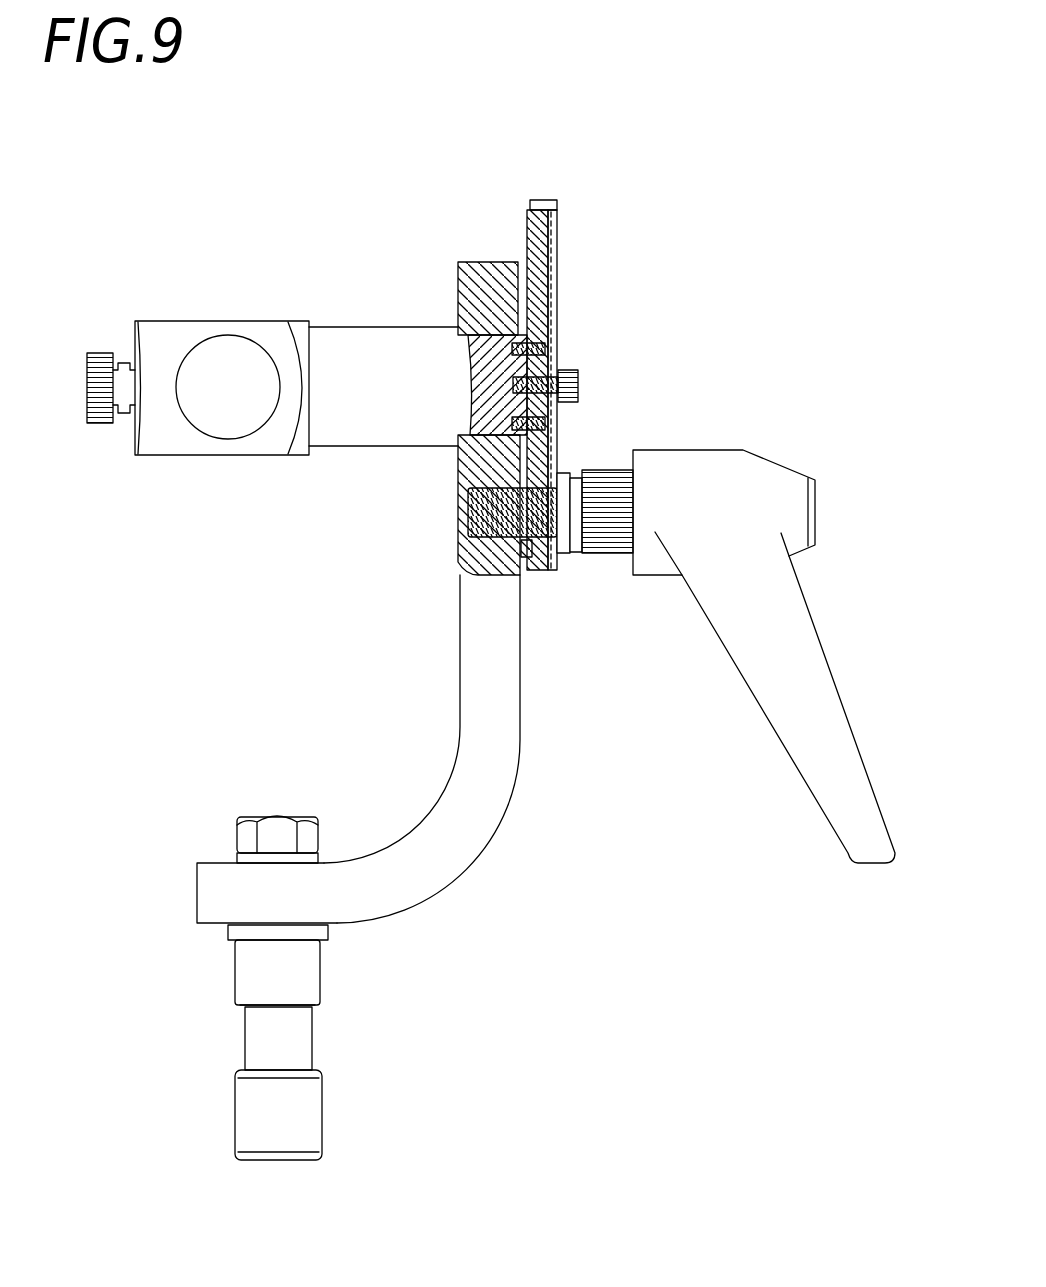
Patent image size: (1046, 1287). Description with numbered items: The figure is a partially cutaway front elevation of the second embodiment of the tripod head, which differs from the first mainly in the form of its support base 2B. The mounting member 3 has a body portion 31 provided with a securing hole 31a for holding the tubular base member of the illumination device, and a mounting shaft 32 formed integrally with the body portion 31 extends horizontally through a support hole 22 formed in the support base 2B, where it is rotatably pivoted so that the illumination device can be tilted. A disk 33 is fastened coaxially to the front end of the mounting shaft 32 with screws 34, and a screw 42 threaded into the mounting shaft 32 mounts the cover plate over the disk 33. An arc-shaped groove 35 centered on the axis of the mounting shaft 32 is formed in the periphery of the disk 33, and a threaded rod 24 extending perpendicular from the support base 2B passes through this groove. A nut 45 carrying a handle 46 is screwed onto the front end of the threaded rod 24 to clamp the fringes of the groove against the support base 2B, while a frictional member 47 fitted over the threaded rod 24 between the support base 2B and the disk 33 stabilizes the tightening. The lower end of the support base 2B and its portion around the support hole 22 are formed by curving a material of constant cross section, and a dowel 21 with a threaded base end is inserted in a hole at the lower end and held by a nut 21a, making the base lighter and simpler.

The mounting member 3 is at (291, 267).
The body portion 31 is at (193, 332).
The securing hole 31a is at (212, 417).
The mounting shaft 32 is at (382, 340).
The support hole 22 is at (482, 425).
The disk 33 is at (552, 222).
The screws 34 is at (531, 417).
The screw 42 is at (580, 373).
The threaded rod 24 is at (528, 511).
The arc-shaped groove 35 is at (573, 552).
The nut 45 is at (612, 533).
The frictional member 47 is at (522, 548).
The handle 46 is at (822, 712).
The support base 2B is at (538, 724).
The nut 21a is at (277, 835).
The dowel 21 is at (295, 1110).